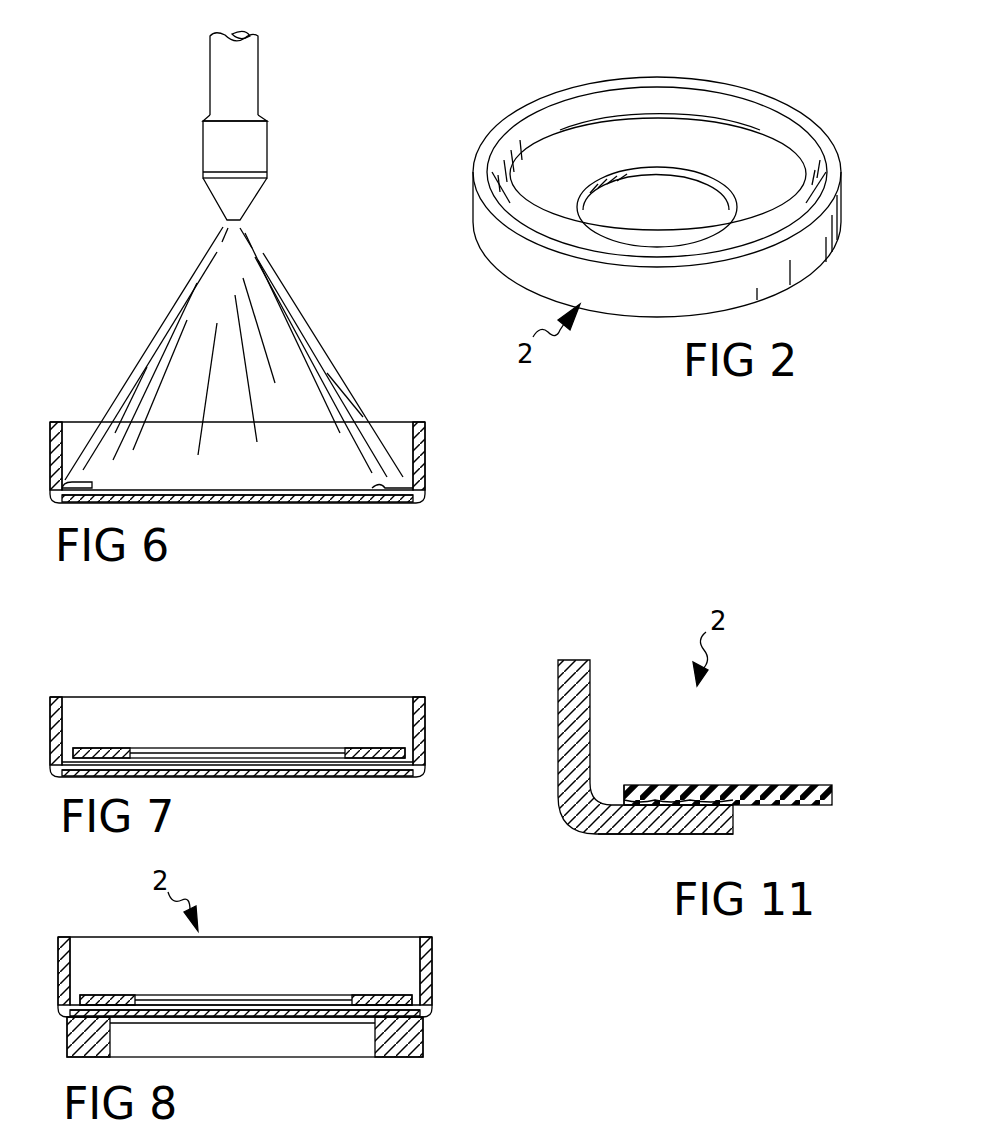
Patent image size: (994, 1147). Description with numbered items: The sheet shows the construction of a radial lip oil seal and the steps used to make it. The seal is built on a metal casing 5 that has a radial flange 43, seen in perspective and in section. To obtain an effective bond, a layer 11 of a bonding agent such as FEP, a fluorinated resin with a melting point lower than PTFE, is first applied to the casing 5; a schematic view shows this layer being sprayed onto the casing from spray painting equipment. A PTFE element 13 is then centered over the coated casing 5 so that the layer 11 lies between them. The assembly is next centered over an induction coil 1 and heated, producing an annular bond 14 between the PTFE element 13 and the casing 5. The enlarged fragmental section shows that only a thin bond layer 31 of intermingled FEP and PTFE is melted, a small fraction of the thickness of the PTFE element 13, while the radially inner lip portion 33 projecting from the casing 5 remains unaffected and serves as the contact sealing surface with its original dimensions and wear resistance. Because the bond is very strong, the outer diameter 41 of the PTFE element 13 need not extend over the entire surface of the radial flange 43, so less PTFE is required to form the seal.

In FIG. 8, the induction coil 1 is at (413, 1040).
In FIG. 6, the casing 5 is at (418, 462).
In FIG. 2, the casing 5 is at (720, 85).
In FIG. 7, the casing 5 is at (418, 740).
In FIG. 8, the casing 5 is at (430, 983).
In FIG. 11, the casing 5 is at (582, 686).
In FIG. 6, the layer of bonding agent 11 is at (376, 486).
In FIG. 7, the layer of bonding agent 11 is at (372, 766).
In FIG. 2, the PTFE element 13 is at (608, 152).
In FIG. 7, the PTFE element 13 is at (358, 748).
In FIG. 8, the PTFE element 13 is at (363, 995).
In FIG. 11, the PTFE element 13 is at (697, 790).
In FIG. 6, the annular bond 14 is at (258, 143).
In FIG. 8, the annular bond 14 is at (385, 1032).
In FIG. 11, the bond layer 31 is at (660, 817).
In FIG. 11, the radially inner lip portion 33 is at (797, 785).
In FIG. 2, the outer diameter 41 is at (796, 175).
In FIG. 11, the outer diameter 41 is at (624, 797).
In FIG. 2, the radial flange 43 is at (518, 175).
In FIG. 11, the radial flange 43 is at (720, 822).